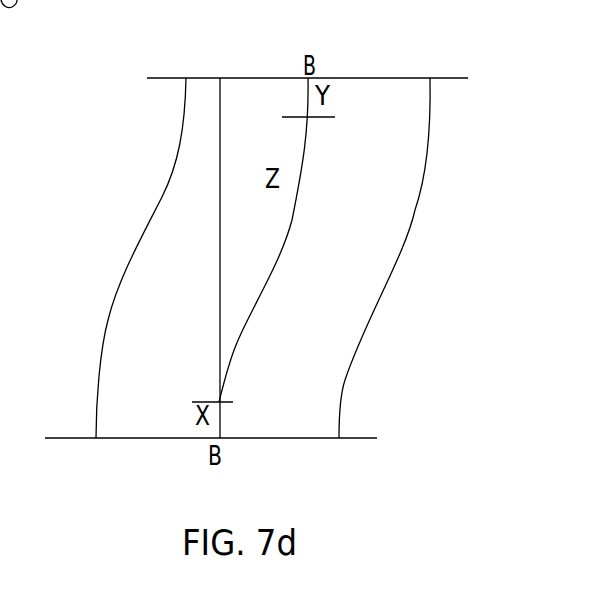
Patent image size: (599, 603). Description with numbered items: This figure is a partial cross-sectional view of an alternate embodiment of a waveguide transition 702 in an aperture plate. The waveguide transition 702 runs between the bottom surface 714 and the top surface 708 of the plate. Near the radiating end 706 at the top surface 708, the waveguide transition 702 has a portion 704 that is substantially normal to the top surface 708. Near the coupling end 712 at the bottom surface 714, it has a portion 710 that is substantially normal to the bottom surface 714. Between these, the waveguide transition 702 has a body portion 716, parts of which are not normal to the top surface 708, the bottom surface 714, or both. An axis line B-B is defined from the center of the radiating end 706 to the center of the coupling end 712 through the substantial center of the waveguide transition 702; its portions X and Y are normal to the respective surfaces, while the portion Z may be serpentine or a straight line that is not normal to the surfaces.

The waveguide transition 702 is at (108, 401).
The portion near the radiating end 704 is at (341, 428).
The radiating end 706 is at (250, 439).
The top surface 708 is at (357, 439).
The portion near the coupling end 710 is at (431, 106).
The coupling end 712 is at (387, 77).
The bottom surface 714 is at (160, 77).
The body portion 716 is at (391, 271).